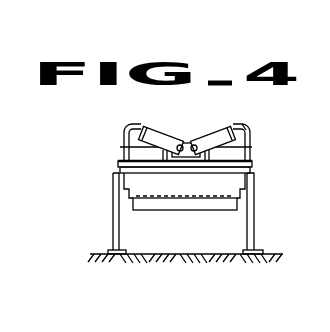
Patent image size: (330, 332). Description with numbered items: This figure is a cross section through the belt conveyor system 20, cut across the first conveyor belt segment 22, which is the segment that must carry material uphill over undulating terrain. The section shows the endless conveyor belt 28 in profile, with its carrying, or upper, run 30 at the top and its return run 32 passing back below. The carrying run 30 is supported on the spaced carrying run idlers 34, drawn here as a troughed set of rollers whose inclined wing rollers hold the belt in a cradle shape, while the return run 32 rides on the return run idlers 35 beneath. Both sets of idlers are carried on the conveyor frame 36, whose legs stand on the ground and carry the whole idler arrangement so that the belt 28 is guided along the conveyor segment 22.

The belt conveyor system 20 is at (86, 120).
The first conveyor belt segment 22 is at (216, 126).
The endless conveyor belt 28 is at (248, 136).
The carrying run 30 is at (177, 138).
The return run 32 is at (208, 193).
The carrying run idlers 34 is at (124, 148).
The return run idlers 35 is at (150, 209).
The conveyor frame 36 is at (256, 215).